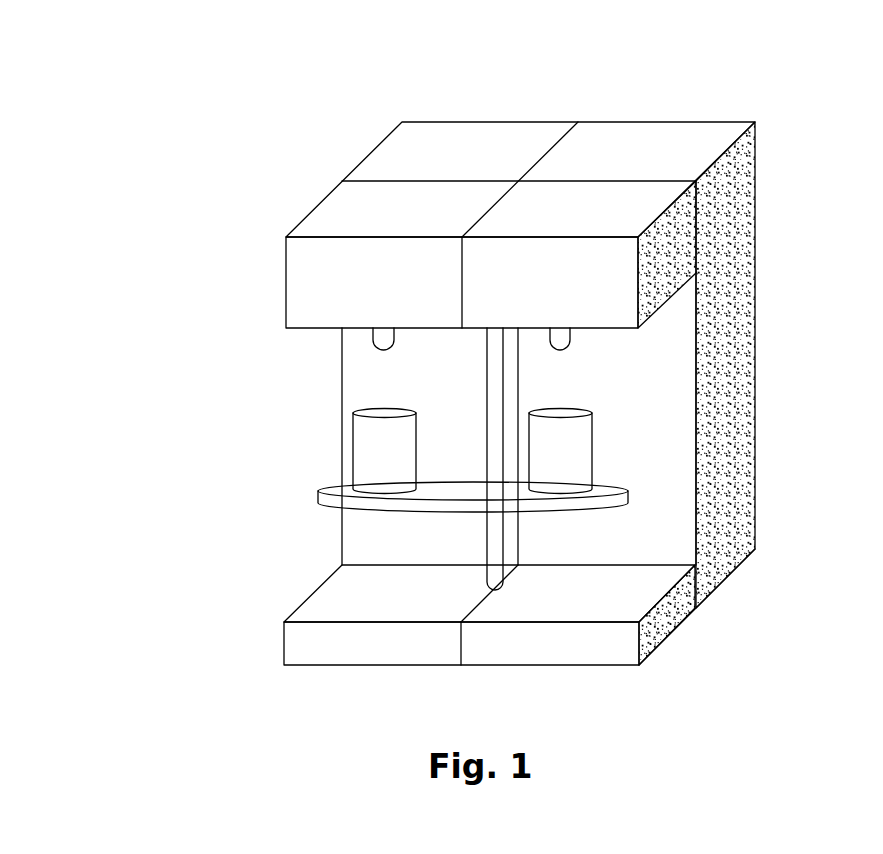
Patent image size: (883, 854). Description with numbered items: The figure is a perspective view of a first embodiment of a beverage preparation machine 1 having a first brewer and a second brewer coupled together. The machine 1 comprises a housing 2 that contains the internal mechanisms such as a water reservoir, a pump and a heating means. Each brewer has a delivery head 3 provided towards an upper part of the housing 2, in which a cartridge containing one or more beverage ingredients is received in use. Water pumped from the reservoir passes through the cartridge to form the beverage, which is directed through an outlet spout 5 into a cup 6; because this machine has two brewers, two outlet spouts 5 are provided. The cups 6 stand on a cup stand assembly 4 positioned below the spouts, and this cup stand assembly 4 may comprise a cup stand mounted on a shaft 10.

The beverage preparation machine 1 is at (752, 84).
The housing 2 is at (777, 364).
The delivery head 3 is at (457, 225).
The cup stand assembly 4 is at (404, 534).
The outlet spout 5 is at (495, 364).
The cup 6 is at (388, 451).
The shaft 10 is at (337, 511).